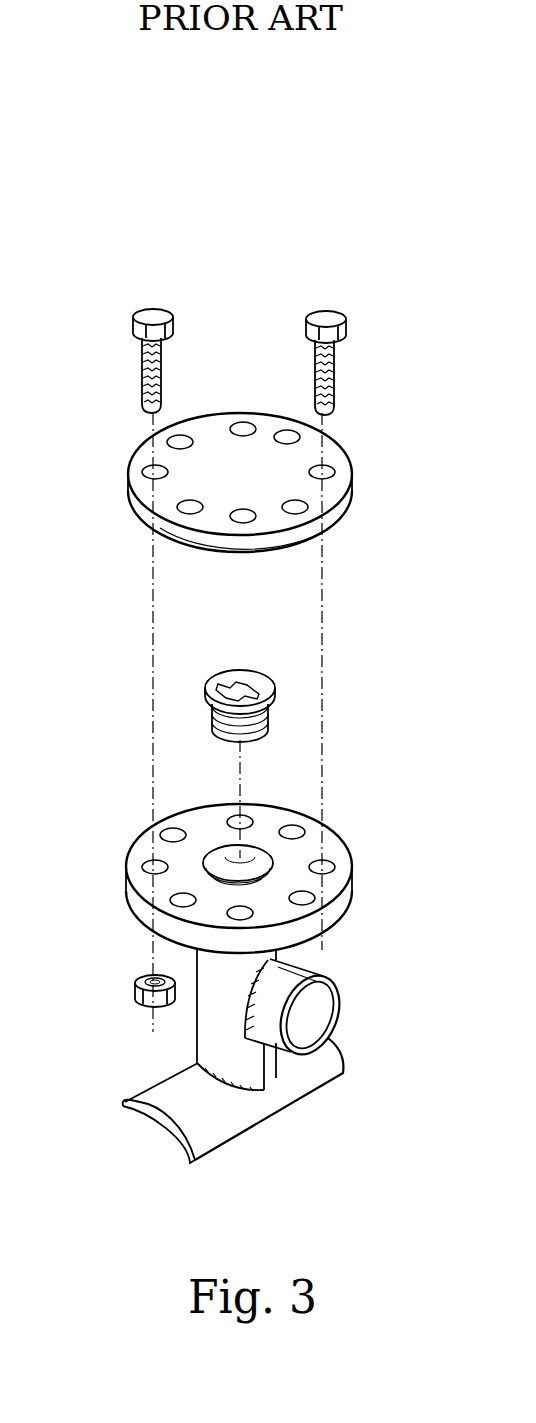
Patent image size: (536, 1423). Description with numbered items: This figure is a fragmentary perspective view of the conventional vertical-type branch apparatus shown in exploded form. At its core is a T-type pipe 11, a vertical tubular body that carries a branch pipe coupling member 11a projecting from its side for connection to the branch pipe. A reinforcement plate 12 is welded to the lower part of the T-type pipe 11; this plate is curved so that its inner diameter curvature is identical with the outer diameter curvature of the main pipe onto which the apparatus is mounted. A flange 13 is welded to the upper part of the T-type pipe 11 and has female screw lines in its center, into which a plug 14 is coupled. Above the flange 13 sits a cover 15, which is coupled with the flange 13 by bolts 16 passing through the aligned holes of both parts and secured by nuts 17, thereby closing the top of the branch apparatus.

The T-type pipe 11 is at (210, 1012).
The branch pipe coupling member 11a is at (320, 962).
The reinforcement plate 12 is at (262, 1108).
The flange 13 is at (177, 867).
The plug 14 is at (263, 688).
The cover 15 is at (292, 467).
The bolts 16 is at (310, 322).
The nuts 17 is at (137, 987).